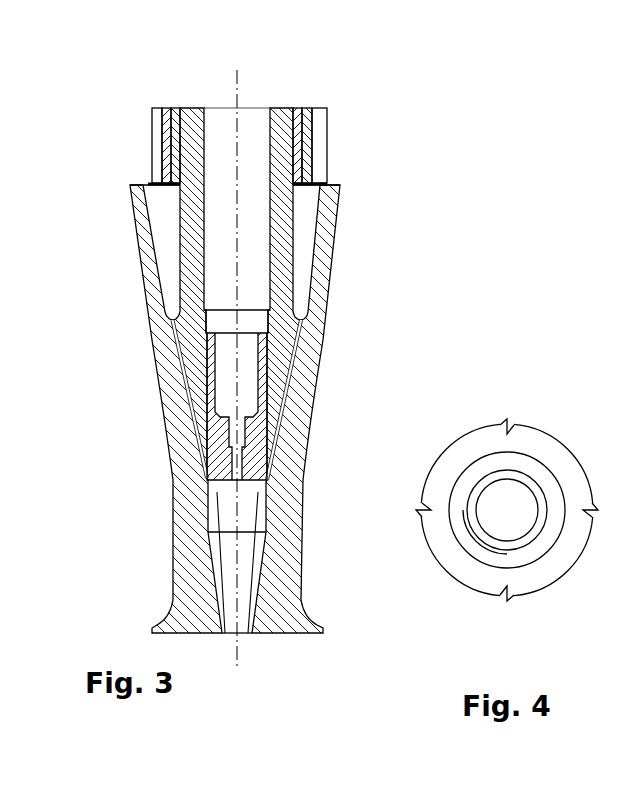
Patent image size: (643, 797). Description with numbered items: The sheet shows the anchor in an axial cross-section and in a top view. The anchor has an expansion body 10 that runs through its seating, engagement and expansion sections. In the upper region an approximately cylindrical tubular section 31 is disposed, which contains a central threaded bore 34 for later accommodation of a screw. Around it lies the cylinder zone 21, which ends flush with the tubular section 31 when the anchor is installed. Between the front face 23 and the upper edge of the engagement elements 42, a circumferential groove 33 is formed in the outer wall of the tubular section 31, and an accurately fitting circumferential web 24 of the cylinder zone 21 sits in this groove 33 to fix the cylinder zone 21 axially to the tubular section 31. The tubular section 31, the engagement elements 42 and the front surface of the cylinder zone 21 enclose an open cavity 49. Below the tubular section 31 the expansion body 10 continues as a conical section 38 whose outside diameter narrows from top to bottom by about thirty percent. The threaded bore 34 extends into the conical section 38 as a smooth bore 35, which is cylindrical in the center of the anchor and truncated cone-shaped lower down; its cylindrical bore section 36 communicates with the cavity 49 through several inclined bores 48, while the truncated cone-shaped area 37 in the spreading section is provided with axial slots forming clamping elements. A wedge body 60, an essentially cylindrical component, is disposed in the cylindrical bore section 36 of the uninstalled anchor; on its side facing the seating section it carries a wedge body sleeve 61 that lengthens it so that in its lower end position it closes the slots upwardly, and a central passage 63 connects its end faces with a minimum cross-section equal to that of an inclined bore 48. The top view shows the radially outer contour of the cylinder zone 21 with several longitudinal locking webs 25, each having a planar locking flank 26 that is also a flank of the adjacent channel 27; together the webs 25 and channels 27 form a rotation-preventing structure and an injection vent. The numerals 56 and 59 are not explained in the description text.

In FIG. 3, the expansion body 10 is at (320, 363).
In FIG. 3, the cylinder zone 21 is at (168, 118).
In FIG. 4, the cylinder zone 21 is at (542, 572).
In FIG. 3, the front face 23 is at (268, 107).
In FIG. 3, the circumferential web 24 is at (256, 136).
In FIG. 4, the longitudinal locking web 25 is at (510, 602).
In FIG. 3, the locking flank 26 is at (318, 117).
In FIG. 4, the locking flank 26 is at (508, 588).
In FIG. 3, the channel 27 is at (157, 148).
In FIG. 4, the channel 27 is at (502, 595).
In FIG. 3, the tubular section 31 is at (188, 200).
In FIG. 3, the circumferential groove 33 is at (293, 146).
In FIG. 3, the threaded bore 34 is at (303, 176).
In FIG. 3, the smooth bore 35 is at (235, 500).
In FIG. 3, the cylindrical bore section 36 is at (207, 322).
In FIG. 3, the truncated cone-shaped area 37 is at (213, 583).
In FIG. 3, the conical section 38 is at (167, 363).
In FIG. 3, the engagement element 42 is at (145, 272).
In FIG. 3, the inclined bore 48 is at (177, 333).
In FIG. 3, the open cavity 49 is at (168, 247).
In FIG. 3, the base flange 56 is at (193, 633).
In FIG. 3, the nozzle tube 59 is at (209, 523).
In FIG. 3, the wedge body 60 is at (218, 437).
In FIG. 3, the wedge body sleeve 61 is at (215, 382).
In FIG. 3, the passage 63 is at (233, 458).